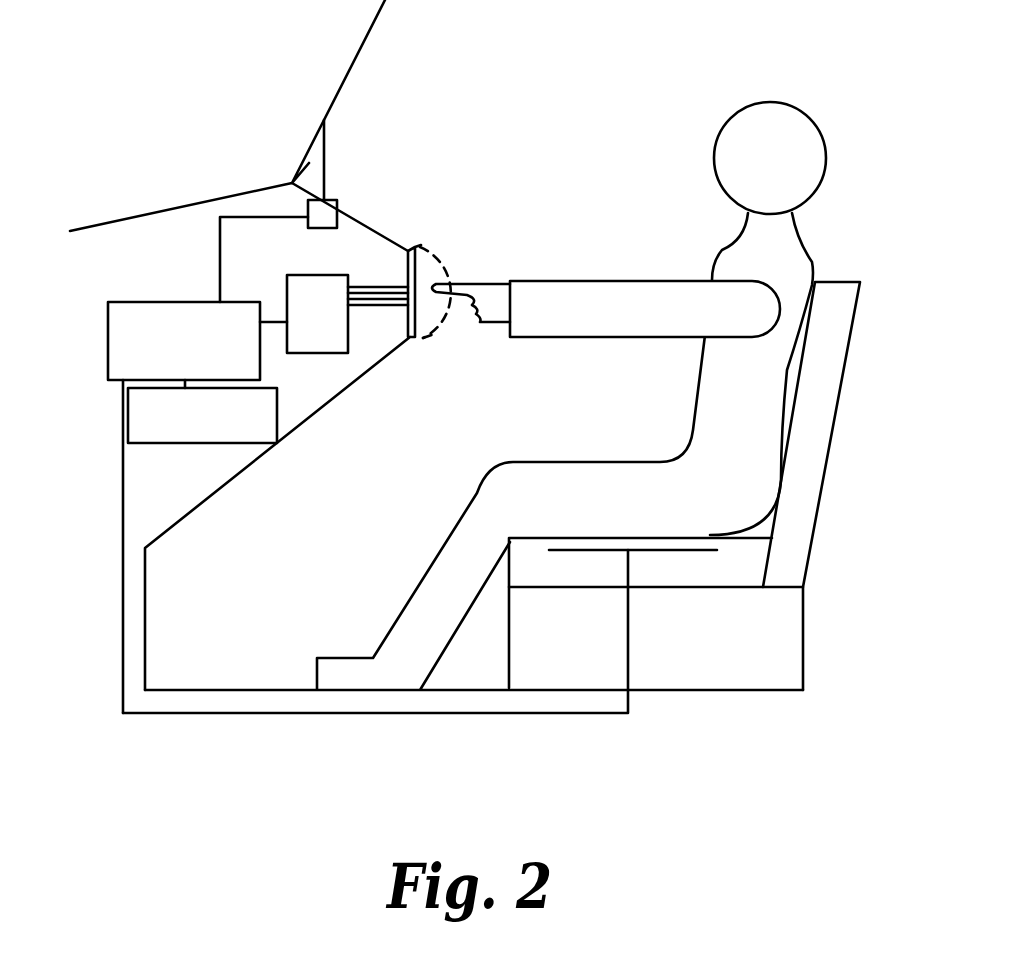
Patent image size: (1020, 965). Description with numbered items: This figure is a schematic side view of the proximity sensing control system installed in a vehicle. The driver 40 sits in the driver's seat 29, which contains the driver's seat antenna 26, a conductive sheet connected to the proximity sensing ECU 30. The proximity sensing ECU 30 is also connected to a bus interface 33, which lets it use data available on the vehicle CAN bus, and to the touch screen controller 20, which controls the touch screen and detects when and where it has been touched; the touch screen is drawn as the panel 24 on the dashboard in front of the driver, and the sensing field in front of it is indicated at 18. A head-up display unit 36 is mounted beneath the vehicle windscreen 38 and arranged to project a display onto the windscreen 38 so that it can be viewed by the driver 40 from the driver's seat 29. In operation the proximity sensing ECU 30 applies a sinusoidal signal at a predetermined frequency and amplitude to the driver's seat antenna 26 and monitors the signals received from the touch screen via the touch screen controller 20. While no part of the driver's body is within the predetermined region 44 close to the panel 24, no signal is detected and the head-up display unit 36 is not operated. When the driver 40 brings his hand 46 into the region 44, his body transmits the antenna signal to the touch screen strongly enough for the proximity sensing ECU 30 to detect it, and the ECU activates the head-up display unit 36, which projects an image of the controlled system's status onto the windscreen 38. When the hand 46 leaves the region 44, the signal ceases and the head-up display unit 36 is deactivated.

The proximity sensing zone 18 is at (417, 284).
The touch screen controller 20 is at (308, 347).
The display panel 24 is at (422, 243).
The driver's seat antenna 26 is at (668, 552).
The driver's seat 29 is at (743, 668).
The proximity sensing ECU 30 is at (165, 305).
The bus interface 33 is at (190, 444).
The head-up display unit 36 is at (325, 217).
The vehicle windscreen 38 is at (350, 63).
The driver 40 is at (600, 482).
The predetermined region 44 is at (443, 328).
The hand 46 is at (488, 313).